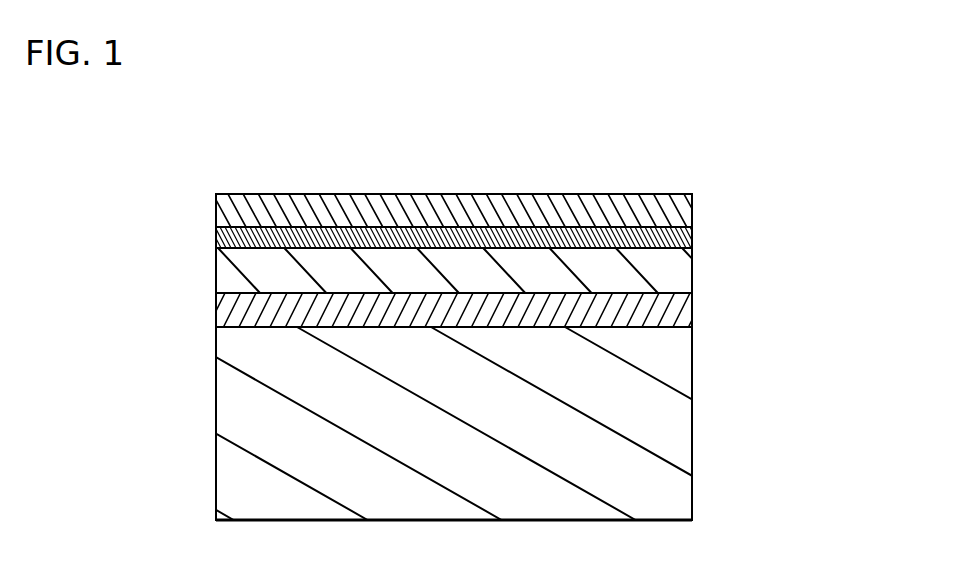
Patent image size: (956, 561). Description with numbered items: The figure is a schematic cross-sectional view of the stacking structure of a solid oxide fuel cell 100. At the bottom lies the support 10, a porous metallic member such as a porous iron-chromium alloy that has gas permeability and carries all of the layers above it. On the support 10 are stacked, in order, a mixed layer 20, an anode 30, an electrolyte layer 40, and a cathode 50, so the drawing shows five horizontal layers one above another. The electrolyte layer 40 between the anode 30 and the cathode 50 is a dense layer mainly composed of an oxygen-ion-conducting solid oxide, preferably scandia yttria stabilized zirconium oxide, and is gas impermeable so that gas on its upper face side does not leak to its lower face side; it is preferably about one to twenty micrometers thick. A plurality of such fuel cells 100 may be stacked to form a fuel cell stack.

The solid oxide fuel cell 100 is at (871, 137).
The support 10 is at (682, 442).
The mixed layer 20 is at (682, 317).
The anode 30 is at (225, 277).
The electrolyte layer 40 is at (685, 234).
The cathode 50 is at (225, 221).